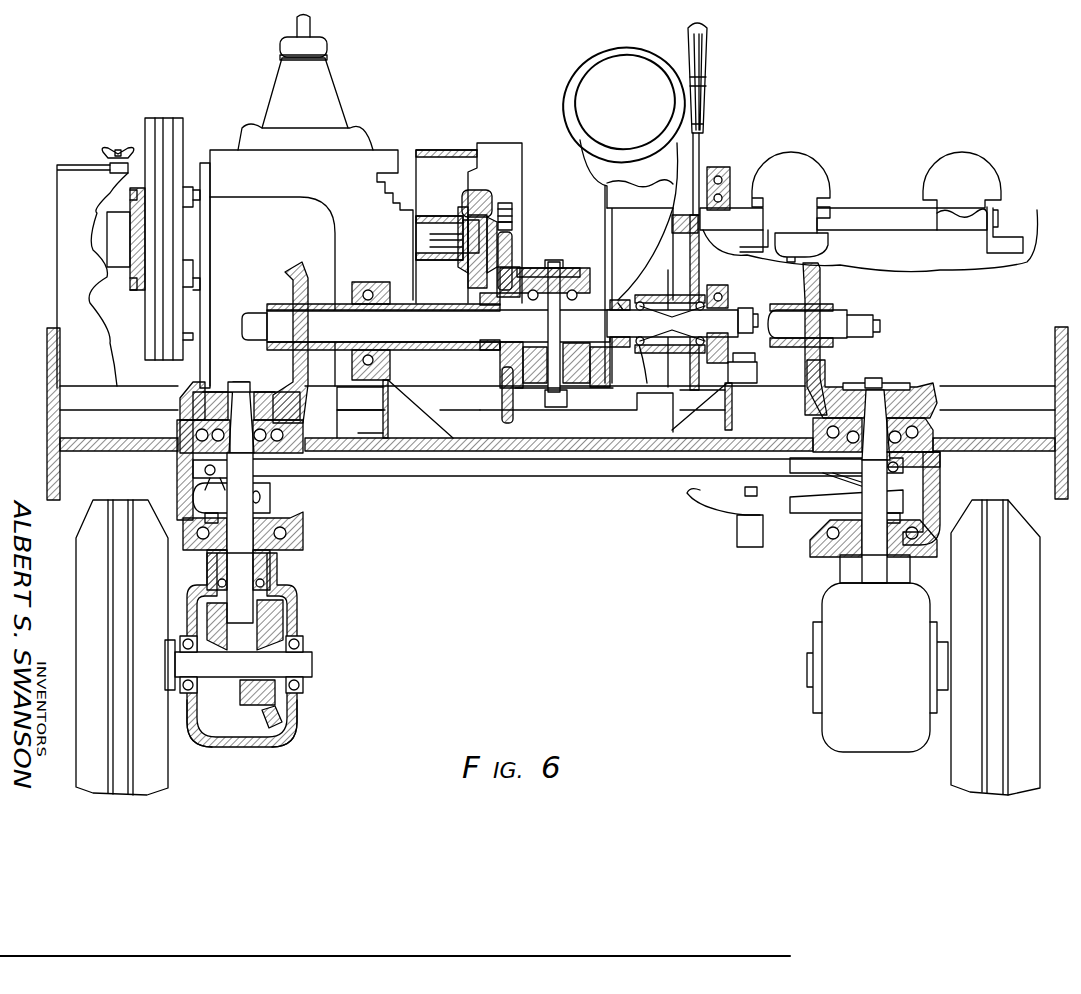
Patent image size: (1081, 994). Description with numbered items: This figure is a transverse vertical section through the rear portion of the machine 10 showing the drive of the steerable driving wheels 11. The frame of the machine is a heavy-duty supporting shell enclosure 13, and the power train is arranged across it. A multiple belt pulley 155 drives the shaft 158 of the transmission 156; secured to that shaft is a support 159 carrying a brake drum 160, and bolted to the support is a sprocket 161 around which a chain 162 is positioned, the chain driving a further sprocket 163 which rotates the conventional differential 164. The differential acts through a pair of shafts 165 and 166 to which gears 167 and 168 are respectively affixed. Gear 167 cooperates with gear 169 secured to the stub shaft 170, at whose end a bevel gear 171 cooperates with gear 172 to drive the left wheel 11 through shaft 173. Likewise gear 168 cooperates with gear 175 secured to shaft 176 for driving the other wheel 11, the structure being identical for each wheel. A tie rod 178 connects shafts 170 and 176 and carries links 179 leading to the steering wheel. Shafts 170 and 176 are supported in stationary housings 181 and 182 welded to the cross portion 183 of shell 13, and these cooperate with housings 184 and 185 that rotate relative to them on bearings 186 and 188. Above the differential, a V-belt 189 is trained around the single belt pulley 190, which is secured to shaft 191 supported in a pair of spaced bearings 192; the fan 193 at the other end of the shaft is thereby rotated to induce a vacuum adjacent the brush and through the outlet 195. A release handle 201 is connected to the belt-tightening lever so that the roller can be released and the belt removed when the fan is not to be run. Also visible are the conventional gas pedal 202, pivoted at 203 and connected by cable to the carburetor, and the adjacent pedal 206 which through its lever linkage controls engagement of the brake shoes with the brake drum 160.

The machine 10 is at (75, 158).
The steerable driving wheels 11 is at (122, 512).
The supporting shell enclosure 13 is at (47, 386).
The multiple belt pulley 155 is at (185, 123).
The transmission 156 is at (365, 118).
The shaft of transmission 158 is at (425, 232).
The support 159 is at (480, 193).
The brake drum 160 is at (443, 150).
The sprocket 161 is at (512, 203).
The chain 162 is at (513, 222).
The sprocket 163 is at (514, 250).
The differential 164 is at (590, 403).
The shaft 165 is at (457, 334).
The shaft 166 is at (838, 323).
The gear 167 is at (294, 267).
The gear 168 is at (822, 290).
The gear 169 is at (213, 393).
The stub shaft 170 is at (247, 560).
The bevel gear 171 is at (262, 610).
The gear 172 is at (285, 718).
The shaft 173 is at (300, 662).
The gear 175 is at (918, 383).
The shaft 176 is at (875, 552).
The tie rod 178 is at (652, 477).
The links 179 is at (752, 545).
The housing 181 is at (178, 504).
The housing 182 is at (940, 487).
The cross portion 183 is at (988, 438).
The housing 184 is at (243, 750).
The housing 185 is at (835, 745).
The bearings 186 is at (292, 427).
The bearings 188 is at (922, 437).
The belt 189 is at (718, 290).
The single belt pulley 190 is at (728, 297).
The shaft 191 is at (737, 313).
The bearings 192 is at (685, 331).
The fan 193 is at (650, 256).
The outlet 195 is at (622, 70).
The release handle 201 is at (708, 62).
The gas pedal 202 is at (965, 160).
The pivot 203 is at (873, 217).
The pedal 206 is at (800, 160).